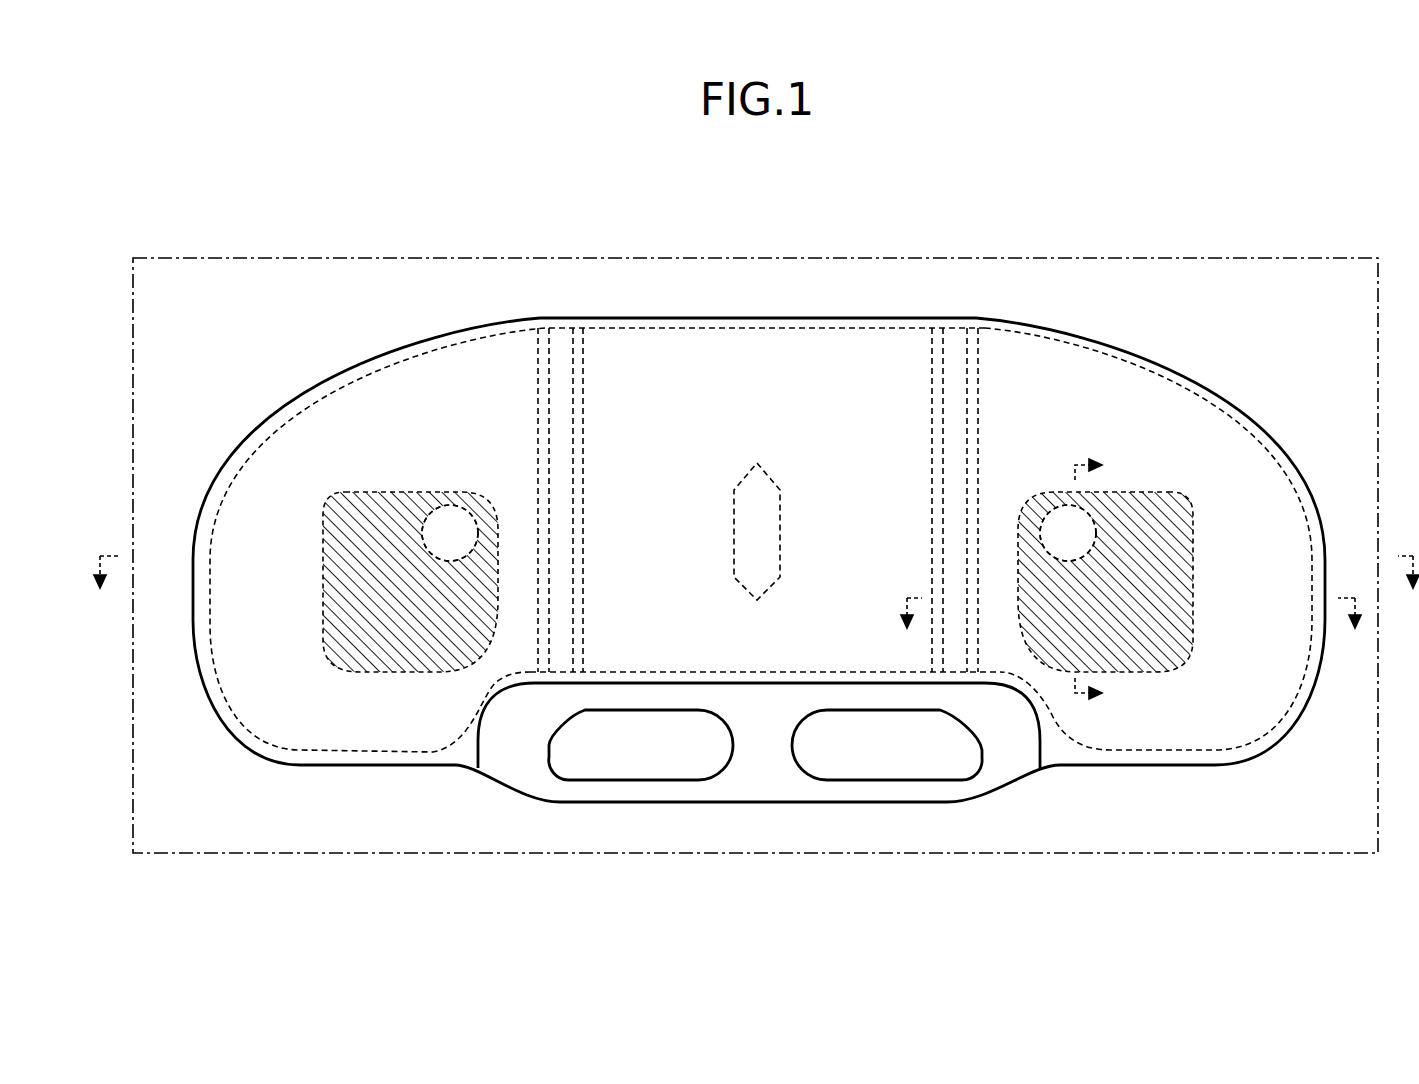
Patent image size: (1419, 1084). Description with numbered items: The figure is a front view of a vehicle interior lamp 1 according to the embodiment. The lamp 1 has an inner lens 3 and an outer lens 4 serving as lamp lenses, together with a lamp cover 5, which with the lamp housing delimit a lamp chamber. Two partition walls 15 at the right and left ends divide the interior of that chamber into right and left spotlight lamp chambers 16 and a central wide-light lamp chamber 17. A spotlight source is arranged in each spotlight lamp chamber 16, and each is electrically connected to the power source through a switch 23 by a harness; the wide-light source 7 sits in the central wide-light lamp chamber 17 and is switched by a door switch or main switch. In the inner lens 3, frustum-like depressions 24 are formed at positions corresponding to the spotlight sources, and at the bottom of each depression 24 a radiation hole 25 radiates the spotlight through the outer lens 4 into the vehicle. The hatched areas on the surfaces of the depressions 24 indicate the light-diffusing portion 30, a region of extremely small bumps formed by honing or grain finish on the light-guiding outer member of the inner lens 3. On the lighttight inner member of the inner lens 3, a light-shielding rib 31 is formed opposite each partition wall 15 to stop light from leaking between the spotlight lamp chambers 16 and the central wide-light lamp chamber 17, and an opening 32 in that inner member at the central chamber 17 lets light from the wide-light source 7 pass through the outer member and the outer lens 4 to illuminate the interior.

The vehicle interior lamp 1 is at (754, 531).
The inner lens 3 is at (690, 335).
The outer lens 4 is at (655, 318).
The lamp cover 5 is at (282, 258).
The wide-light source 7 is at (762, 472).
The partition wall 15 is at (585, 392).
The spotlight lamp chamber 16 is at (394, 405).
The central wide-light lamp chamber 17 is at (765, 445).
The switch 23 is at (646, 781).
The frustum-like depression 24 is at (763, 551).
The radiation hole 25 is at (472, 508).
The light-diffusing portion 30 is at (763, 551).
The light-shielding rib 31 is at (538, 392).
The opening 32 is at (588, 362).